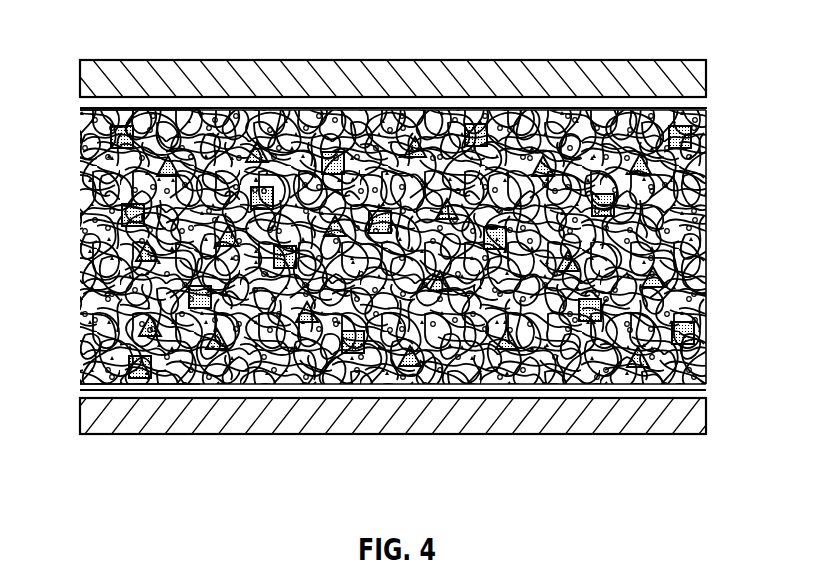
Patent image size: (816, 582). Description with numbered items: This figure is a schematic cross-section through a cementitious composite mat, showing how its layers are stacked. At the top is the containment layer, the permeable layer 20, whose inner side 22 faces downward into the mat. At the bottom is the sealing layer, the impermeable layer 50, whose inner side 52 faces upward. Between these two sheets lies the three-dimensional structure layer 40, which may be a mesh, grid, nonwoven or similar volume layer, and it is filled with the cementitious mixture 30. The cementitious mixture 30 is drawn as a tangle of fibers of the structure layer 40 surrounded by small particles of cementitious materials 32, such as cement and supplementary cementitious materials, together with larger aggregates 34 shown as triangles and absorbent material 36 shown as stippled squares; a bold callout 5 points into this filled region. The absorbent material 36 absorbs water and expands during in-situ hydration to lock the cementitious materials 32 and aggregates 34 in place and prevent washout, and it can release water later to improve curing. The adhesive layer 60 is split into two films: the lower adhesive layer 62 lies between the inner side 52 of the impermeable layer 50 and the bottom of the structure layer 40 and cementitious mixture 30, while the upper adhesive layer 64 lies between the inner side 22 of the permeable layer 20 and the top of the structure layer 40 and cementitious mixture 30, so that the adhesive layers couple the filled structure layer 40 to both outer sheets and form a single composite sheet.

The filter medium / layered assembly 5 is at (488, 362).
The permeable layer 20 is at (697, 83).
The inner side 22 is at (700, 108).
The cementitious mixture 30 is at (72, 225).
The cementitious materials 32 is at (101, 341).
The aggregates 34 is at (262, 145).
The absorbent material 36 is at (141, 379).
The structure layer 40 is at (712, 220).
The impermeable layer 50 is at (702, 437).
The inner side 52 is at (697, 391).
The adhesive layer 60 is at (83, 120).
The lower adhesive layer 62 is at (94, 392).
The upper adhesive layer 64 is at (91, 104).